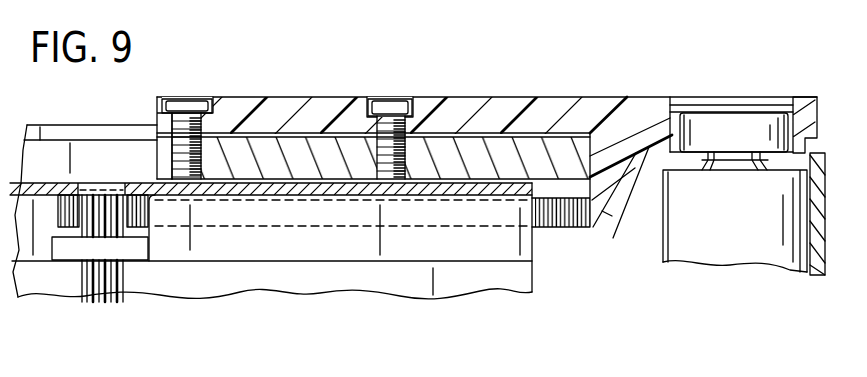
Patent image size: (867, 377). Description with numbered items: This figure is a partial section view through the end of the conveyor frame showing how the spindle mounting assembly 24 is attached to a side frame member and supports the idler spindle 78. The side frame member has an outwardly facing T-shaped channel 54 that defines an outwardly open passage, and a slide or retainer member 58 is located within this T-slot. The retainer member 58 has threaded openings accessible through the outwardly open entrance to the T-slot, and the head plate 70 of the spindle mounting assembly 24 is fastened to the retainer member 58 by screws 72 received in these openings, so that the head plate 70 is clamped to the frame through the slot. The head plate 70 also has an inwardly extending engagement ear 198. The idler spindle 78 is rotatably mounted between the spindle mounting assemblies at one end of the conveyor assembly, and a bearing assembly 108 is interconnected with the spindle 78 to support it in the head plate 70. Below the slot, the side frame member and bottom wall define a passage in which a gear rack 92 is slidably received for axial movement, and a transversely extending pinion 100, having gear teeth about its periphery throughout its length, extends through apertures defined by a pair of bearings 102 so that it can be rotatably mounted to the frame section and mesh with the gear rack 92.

The spindle mounting assembly 24 is at (464, 96).
The T-shaped channel 54 is at (116, 148).
The retainer member 58 is at (284, 153).
The head plate 70 is at (541, 97).
The screws 72 is at (188, 106).
The idler spindle 78 is at (663, 222).
The gear rack 92 is at (62, 213).
The pinion 100 is at (117, 278).
The bearings 102 is at (66, 252).
The bearing assembly 108 is at (312, 247).
The engagement ear 198 is at (607, 213).